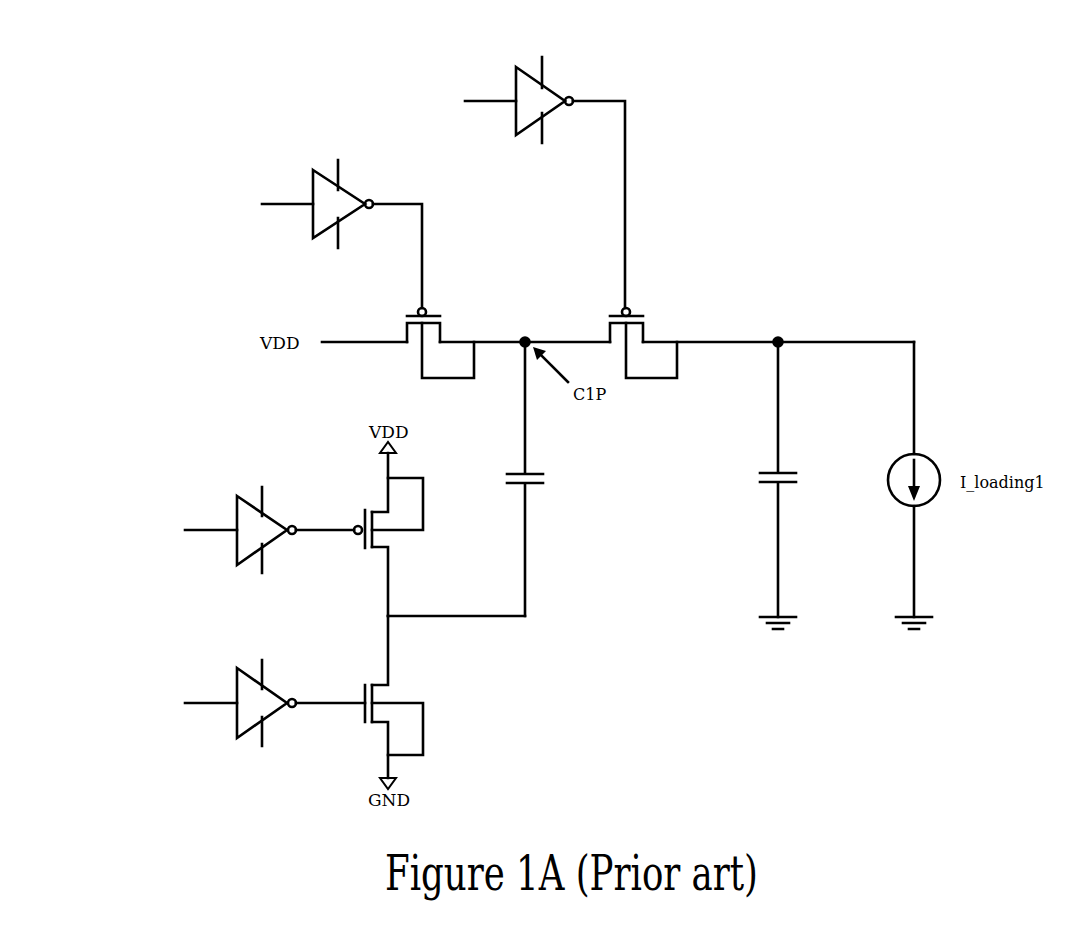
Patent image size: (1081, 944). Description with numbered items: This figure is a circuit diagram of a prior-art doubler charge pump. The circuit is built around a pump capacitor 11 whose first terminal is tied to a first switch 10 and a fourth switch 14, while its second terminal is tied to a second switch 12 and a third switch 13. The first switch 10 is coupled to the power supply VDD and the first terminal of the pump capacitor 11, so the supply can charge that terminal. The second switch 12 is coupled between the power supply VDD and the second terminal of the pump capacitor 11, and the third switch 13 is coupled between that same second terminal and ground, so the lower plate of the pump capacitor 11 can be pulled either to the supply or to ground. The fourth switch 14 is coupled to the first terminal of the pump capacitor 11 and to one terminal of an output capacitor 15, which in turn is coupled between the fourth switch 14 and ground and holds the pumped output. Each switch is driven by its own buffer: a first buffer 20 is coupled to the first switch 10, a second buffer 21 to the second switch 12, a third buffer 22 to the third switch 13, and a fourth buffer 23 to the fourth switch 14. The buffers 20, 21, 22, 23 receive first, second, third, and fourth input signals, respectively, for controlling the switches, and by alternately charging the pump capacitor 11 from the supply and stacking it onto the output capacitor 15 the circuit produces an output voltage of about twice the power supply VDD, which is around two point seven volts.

The first switch 10 is at (443, 332).
The pump capacitor 11 is at (545, 473).
The second switch 12 is at (423, 520).
The third switch 13 is at (423, 735).
The fourth switch 14 is at (646, 332).
The output capacitor 15 is at (797, 472).
The first buffer 20 is at (350, 190).
The second buffer 21 is at (272, 516).
The third buffer 22 is at (272, 688).
The fourth buffer 23 is at (553, 88).